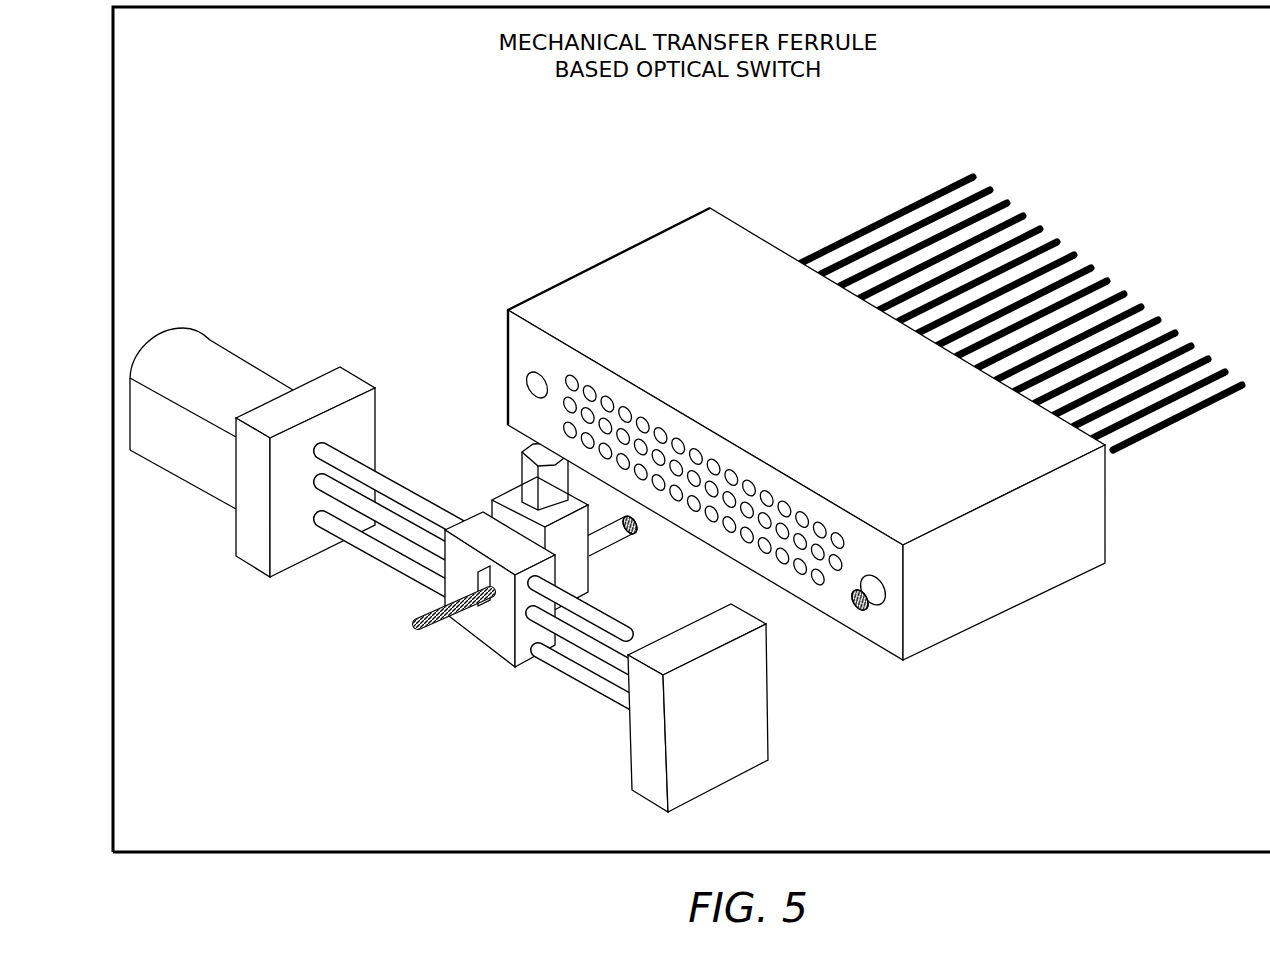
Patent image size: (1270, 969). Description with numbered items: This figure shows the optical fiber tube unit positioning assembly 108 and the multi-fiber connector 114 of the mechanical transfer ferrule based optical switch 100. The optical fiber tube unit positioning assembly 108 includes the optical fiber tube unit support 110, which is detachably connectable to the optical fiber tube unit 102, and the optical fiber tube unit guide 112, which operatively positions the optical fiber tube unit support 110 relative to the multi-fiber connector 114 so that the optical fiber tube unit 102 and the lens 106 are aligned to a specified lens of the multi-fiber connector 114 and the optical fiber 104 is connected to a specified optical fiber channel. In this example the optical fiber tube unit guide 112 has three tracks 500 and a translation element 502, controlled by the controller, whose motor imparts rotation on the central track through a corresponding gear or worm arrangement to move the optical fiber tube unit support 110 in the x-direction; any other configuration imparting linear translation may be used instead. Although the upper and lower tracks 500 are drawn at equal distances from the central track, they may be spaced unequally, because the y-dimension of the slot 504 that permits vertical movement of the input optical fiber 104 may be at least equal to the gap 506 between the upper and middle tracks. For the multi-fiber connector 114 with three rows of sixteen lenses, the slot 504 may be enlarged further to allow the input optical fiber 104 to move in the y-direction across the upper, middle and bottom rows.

The mechanical transfer ferrule based optical switch 100 is at (707, 105).
The optical fiber tube unit 102 is at (634, 546).
The optical fiber 104 is at (433, 633).
The lens 106 is at (634, 532).
The optical fiber tube unit positioning assembly 108 is at (403, 592).
The optical fiber tube unit support 110 is at (510, 487).
The optical fiber tube unit guide 112 is at (505, 670).
The multi-fiber connector 114 is at (578, 277).
The tracks 500 is at (598, 712).
The translation element 502 is at (228, 343).
The slot 504 is at (487, 612).
The gap 506 is at (608, 636).